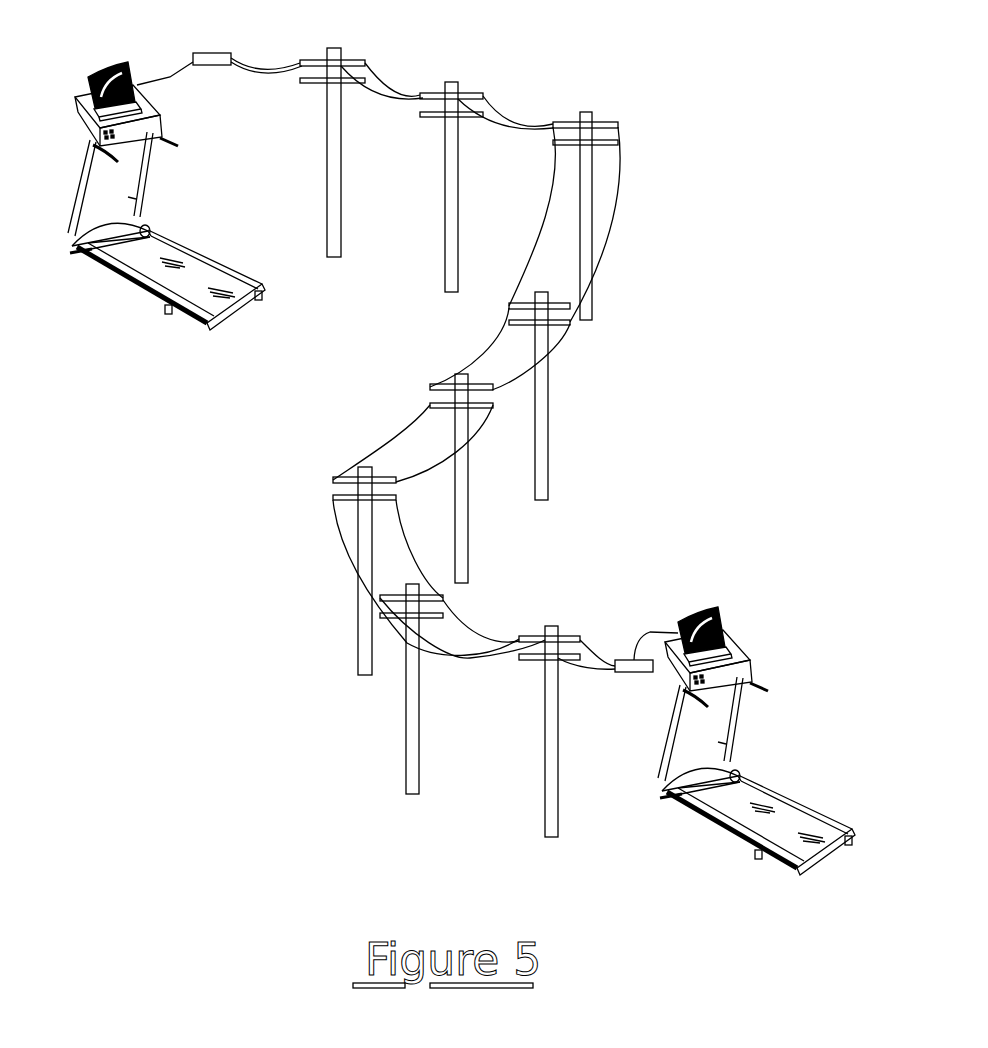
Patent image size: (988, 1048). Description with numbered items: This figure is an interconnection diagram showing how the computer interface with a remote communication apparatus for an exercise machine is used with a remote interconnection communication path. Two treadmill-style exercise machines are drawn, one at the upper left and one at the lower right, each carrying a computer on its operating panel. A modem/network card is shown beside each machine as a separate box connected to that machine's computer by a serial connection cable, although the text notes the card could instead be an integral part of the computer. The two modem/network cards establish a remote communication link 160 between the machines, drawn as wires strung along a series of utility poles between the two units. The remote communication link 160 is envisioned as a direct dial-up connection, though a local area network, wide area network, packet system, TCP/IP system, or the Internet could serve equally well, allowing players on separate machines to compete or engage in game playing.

The remote communication link 160 is at (612, 242).